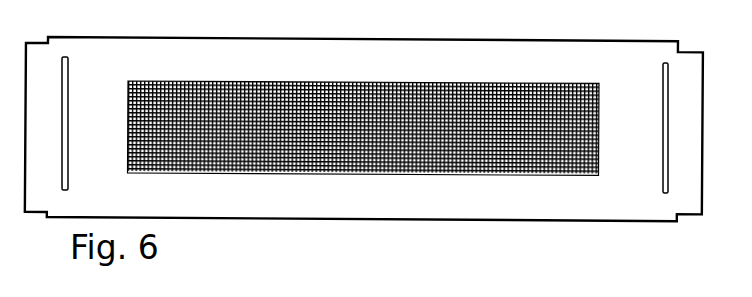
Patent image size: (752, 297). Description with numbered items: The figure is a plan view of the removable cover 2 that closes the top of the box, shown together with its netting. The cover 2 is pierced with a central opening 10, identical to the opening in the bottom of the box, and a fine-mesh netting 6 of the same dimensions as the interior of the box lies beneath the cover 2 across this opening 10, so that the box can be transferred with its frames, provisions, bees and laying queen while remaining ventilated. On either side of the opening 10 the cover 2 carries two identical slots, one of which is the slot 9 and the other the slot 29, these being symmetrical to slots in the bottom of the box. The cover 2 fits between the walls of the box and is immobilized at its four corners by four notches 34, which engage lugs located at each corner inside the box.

The removable cover 2 is at (456, 190).
The fine-mesh netting 6 is at (572, 160).
The slot 9 is at (66, 96).
The opening 10 is at (310, 168).
The right guide bar 29 is at (663, 82).
The notch 34 is at (689, 216).